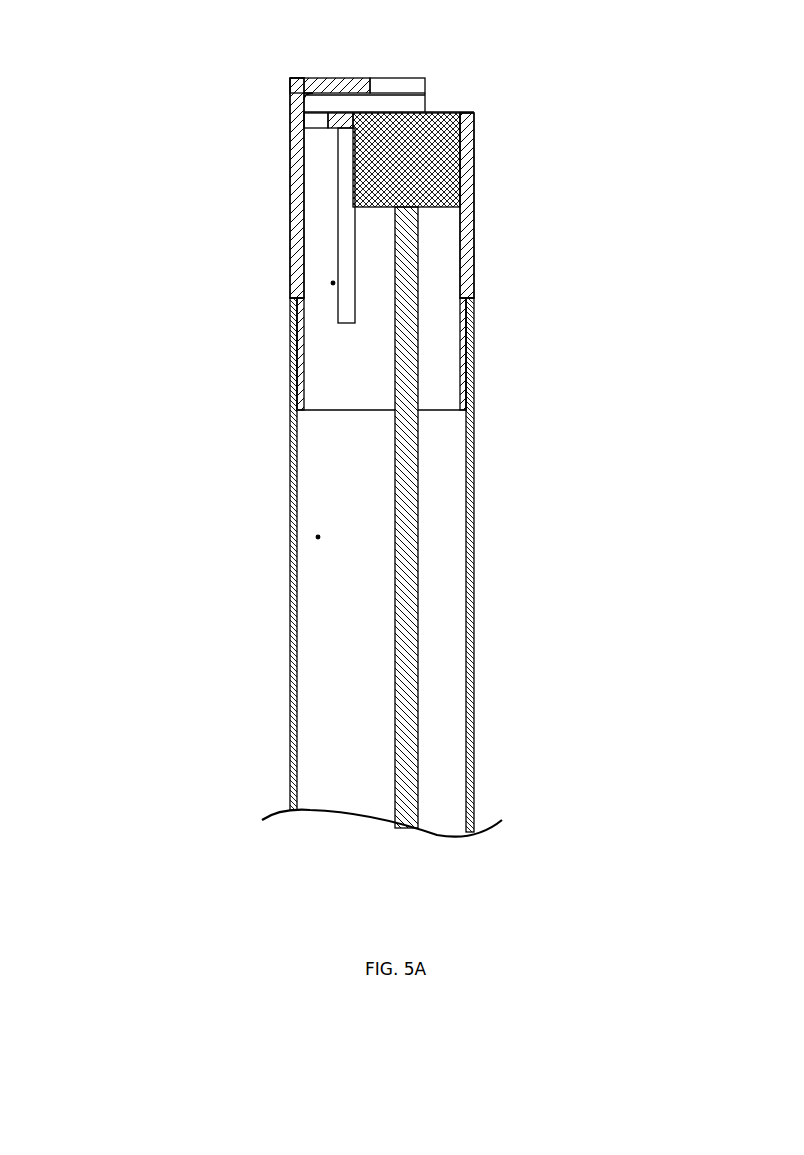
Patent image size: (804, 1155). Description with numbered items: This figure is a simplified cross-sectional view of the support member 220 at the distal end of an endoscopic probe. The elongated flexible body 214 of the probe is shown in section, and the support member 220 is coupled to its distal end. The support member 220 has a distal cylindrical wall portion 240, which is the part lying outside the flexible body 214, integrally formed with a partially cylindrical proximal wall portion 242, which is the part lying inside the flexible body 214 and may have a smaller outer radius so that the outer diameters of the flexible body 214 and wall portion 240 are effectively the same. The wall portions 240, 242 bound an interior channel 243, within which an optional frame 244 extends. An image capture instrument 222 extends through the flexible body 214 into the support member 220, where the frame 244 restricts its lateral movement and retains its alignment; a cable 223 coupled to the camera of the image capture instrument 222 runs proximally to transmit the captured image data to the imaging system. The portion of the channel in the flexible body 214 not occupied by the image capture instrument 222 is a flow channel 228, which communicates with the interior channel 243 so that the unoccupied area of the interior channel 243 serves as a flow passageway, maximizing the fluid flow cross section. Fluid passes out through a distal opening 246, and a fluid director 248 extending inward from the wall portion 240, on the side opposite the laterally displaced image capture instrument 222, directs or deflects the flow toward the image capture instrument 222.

The flexible body 214 is at (475, 565).
The support member 220 is at (118, 177).
The image capture instrument 222 is at (445, 148).
The cable 223 is at (418, 480).
The flow channel 228 is at (318, 537).
The distal cylindrical wall portion 240 is at (475, 233).
The proximal wall portion 242 is at (458, 338).
The interior channel 243 is at (333, 283).
The frame 244 is at (338, 175).
The distal opening 246 is at (318, 120).
The fluid director 248 is at (325, 77).